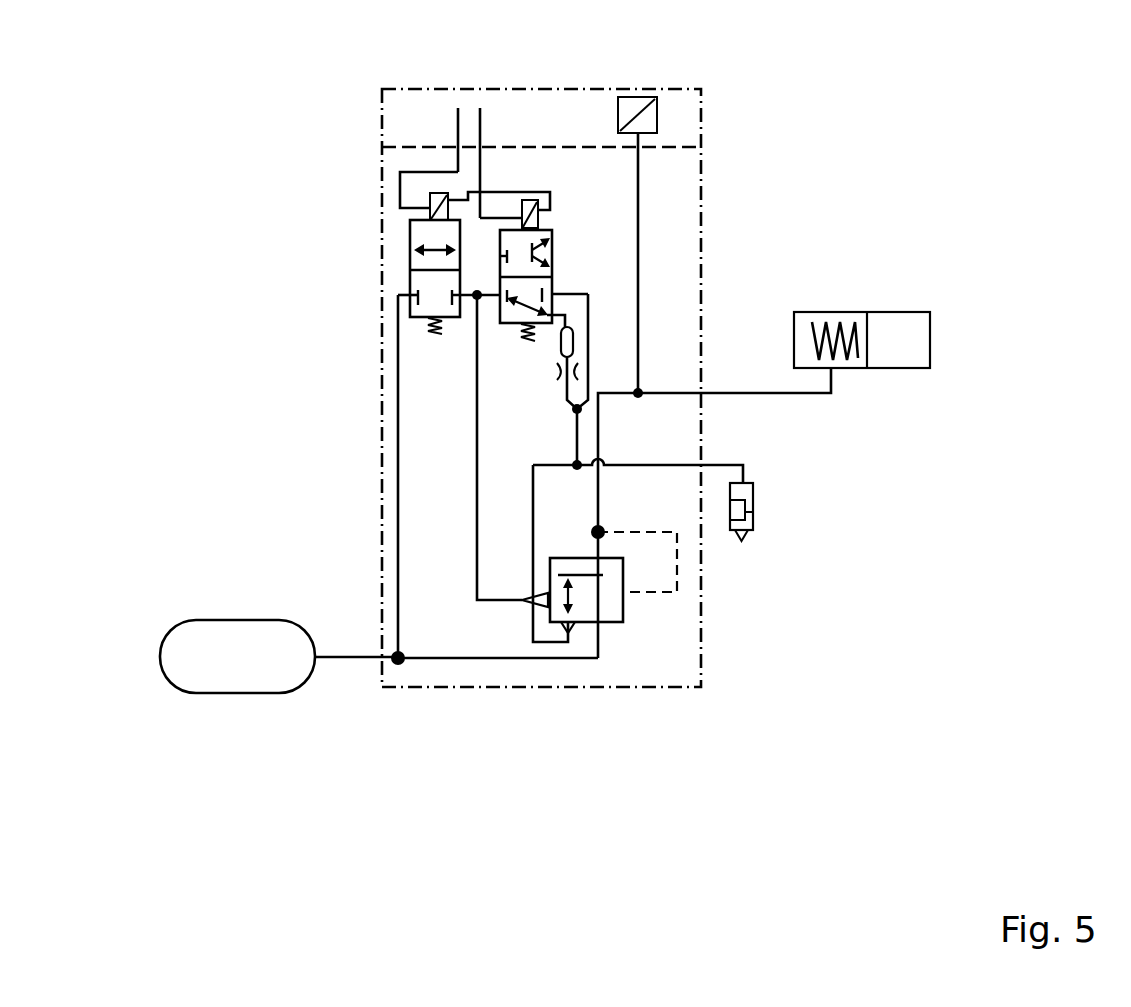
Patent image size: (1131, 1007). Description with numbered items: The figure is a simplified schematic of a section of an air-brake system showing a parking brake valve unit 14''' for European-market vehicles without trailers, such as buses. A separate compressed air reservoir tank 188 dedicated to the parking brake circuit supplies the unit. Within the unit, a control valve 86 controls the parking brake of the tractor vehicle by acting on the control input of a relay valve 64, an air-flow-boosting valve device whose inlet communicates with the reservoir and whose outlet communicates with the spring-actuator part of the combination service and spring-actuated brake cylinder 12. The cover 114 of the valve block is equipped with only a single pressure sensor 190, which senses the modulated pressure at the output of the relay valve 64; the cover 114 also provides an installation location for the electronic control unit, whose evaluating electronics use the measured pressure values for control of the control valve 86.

The brake cylinder 12 is at (878, 299).
The parking brake valve unit 14''' is at (541, 123).
The relay valve 64 is at (577, 558).
The control valve 86 is at (501, 250).
The cover 114 is at (428, 89).
The compressed air reservoir tank 188 is at (286, 622).
The pressure sensor 190 is at (643, 100).